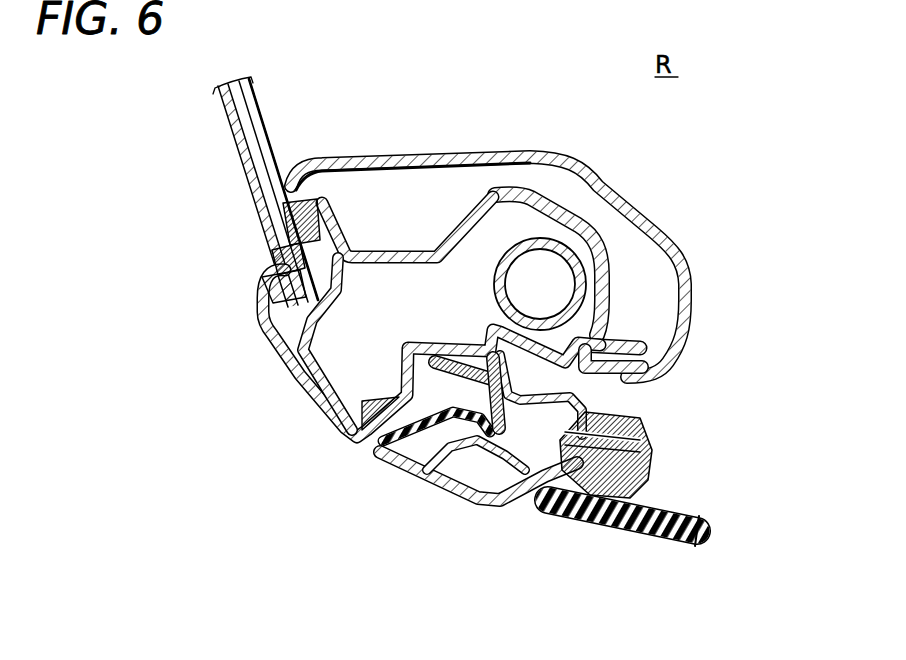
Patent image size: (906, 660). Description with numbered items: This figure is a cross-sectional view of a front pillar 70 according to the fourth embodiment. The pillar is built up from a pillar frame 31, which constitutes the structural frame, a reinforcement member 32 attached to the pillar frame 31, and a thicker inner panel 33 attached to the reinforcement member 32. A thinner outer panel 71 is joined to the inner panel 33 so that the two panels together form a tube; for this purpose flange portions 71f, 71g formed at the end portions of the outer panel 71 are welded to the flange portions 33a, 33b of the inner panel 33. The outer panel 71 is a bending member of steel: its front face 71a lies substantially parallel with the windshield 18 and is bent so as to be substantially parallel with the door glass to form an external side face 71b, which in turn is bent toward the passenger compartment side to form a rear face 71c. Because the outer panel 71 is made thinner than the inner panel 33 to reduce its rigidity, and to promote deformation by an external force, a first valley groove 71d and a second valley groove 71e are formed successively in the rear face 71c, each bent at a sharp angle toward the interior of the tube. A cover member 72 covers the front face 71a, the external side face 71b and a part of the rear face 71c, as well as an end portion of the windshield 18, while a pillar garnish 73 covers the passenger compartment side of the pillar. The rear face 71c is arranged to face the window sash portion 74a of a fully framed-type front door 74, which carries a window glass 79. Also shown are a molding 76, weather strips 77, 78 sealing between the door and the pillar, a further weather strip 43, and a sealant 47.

The windshield 18 is at (233, 130).
The pillar frame 31 is at (490, 275).
The reinforcement member 32 is at (633, 204).
The inner panel 33 is at (531, 214).
The flange portion 33a is at (392, 250).
The flange portion 33b is at (625, 335).
The weather strip 43 is at (277, 267).
The sealant 47 is at (278, 187).
The front pillar 70 is at (683, 167).
The outer panel 71 is at (432, 326).
The front face 71a is at (263, 310).
The external side face 71b is at (300, 390).
The rear face 71c is at (367, 437).
The first valley groove 71d is at (397, 363).
The second valley groove 71e is at (455, 319).
The flange portion 71f is at (317, 200).
The flange portion 71g is at (633, 383).
The cover member 72 is at (327, 423).
The pillar garnish 73 is at (655, 233).
The front door 74 is at (600, 479).
The window sash portion 74a is at (467, 503).
The molding 76 is at (270, 283).
The weather strip 77 is at (425, 447).
The weather strip 78 is at (657, 482).
The window glass 79 is at (650, 545).